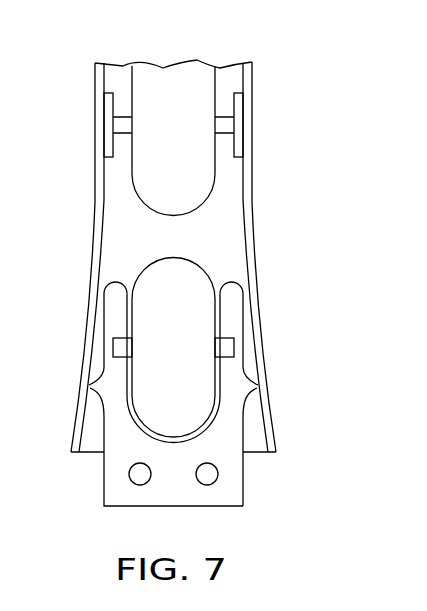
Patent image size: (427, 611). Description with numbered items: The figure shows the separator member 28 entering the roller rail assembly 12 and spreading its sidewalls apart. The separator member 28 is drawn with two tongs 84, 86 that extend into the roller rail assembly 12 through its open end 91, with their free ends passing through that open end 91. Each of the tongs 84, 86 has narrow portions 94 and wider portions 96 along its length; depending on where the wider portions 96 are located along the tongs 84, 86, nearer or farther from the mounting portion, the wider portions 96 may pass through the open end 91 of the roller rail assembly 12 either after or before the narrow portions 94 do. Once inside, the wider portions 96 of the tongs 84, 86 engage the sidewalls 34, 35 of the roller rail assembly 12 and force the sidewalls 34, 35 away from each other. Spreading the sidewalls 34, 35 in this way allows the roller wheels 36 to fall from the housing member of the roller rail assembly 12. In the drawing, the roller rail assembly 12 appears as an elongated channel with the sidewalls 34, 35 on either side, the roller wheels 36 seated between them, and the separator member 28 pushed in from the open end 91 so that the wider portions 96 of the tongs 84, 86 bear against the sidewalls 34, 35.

The roller rail assembly 12 is at (194, 280).
The separator member 28 is at (194, 494).
The sidewall 34 is at (95, 172).
The sidewall 35 is at (253, 173).
The roller wheels 36 is at (182, 77).
The tong 84 is at (104, 490).
The tong 86 is at (243, 463).
The open end 91 is at (90, 455).
The narrow portions 94 is at (103, 325).
The wider portions 96 is at (93, 386).